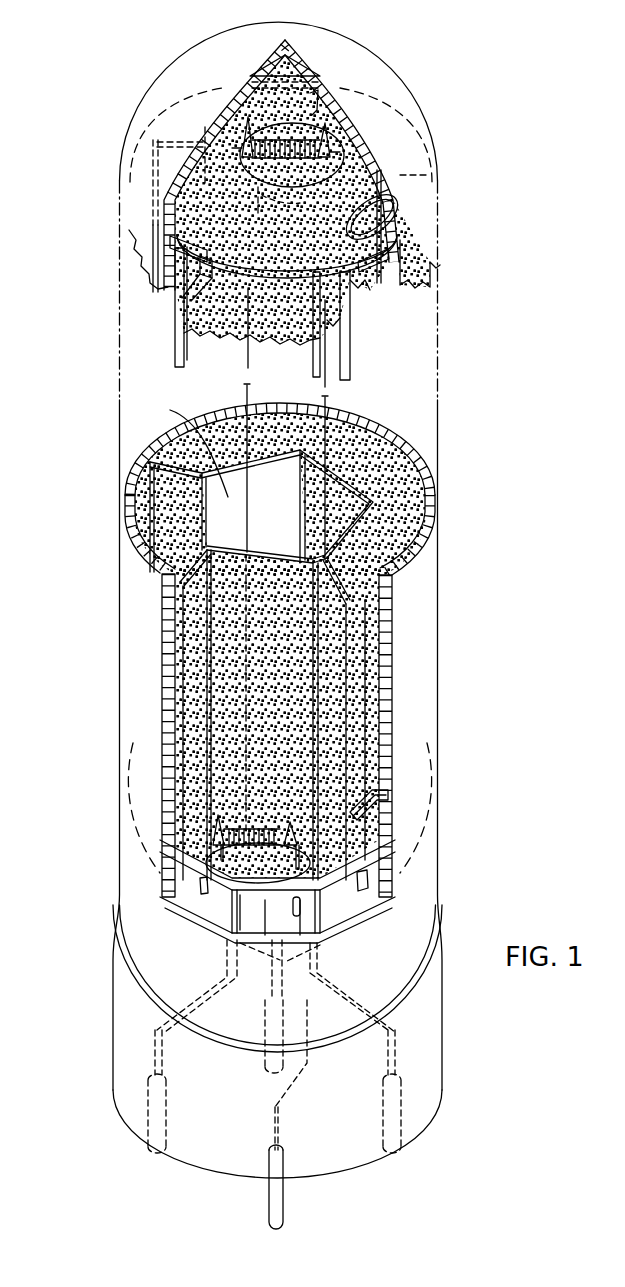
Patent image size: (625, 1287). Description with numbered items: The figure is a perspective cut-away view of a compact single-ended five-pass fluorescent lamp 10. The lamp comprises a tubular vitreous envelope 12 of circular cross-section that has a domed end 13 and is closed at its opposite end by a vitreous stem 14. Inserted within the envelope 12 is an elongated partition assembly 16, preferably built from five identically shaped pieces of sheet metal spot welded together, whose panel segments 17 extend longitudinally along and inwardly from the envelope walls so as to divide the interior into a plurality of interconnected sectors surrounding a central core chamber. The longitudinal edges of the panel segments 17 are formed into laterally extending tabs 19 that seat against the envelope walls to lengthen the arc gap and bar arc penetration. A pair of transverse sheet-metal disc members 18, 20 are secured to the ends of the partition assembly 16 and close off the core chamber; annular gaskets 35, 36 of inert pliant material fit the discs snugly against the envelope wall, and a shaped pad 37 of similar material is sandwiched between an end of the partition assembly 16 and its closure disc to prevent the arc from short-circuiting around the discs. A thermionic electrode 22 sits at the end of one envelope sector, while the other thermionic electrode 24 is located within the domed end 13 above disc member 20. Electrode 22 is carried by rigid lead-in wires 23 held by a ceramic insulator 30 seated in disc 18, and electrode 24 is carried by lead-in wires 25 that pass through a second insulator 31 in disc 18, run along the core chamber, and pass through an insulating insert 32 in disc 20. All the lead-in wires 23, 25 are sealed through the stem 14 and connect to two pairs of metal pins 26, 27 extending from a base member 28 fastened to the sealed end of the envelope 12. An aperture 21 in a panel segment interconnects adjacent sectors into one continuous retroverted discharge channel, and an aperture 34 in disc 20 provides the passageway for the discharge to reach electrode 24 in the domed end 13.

The compact fluorescent lamp 10 is at (521, 353).
The vitreous envelope 12 is at (162, 266).
The domed end 13 is at (237, 50).
The vitreous stem 14 is at (220, 950).
The partition assembly 16 is at (347, 455).
The panel segments 17 is at (150, 523).
The disc member 18 is at (360, 850).
The tabs 19 is at (125, 166).
The disc member 20 is at (247, 118).
The aperture 21 is at (177, 322).
The thermionic electrode 22 is at (230, 832).
The lead-in wires 23 is at (273, 907).
The thermionic electrode 24 is at (278, 163).
The lead-in wires 25 is at (325, 400).
The metal pins 26 is at (277, 1193).
The metal pins 27 is at (390, 1127).
The base member 28 is at (135, 1058).
The insulator 30 is at (233, 856).
The second insulator 31 is at (405, 740).
The insulating insert 32 is at (277, 180).
The aperture 34 is at (380, 216).
The annular gasket 35 is at (357, 877).
The annular gasket 36 is at (180, 238).
The pad 37 is at (363, 823).